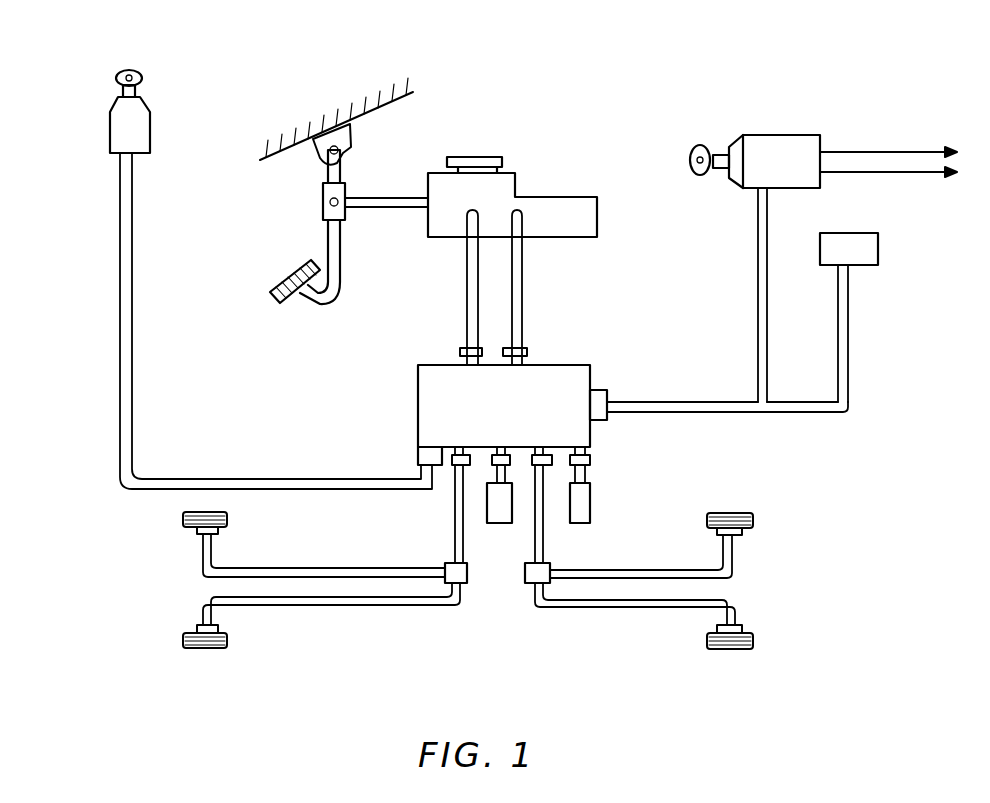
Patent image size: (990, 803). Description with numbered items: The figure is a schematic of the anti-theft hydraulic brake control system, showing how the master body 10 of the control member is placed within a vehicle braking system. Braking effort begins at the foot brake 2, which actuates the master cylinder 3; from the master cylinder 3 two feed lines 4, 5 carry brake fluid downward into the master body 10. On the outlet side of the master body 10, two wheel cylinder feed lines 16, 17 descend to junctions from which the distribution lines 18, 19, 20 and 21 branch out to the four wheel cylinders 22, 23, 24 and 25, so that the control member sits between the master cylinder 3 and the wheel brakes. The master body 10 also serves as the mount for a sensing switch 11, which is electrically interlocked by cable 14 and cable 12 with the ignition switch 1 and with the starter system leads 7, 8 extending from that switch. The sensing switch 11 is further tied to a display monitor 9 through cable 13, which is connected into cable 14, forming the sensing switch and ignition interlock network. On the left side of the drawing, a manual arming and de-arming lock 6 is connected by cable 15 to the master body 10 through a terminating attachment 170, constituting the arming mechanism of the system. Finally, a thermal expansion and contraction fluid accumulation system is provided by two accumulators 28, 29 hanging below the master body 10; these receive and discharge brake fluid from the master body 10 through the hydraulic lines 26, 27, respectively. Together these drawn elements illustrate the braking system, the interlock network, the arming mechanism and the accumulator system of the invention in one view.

The ignition switch 1 is at (765, 143).
The foot brake 2 is at (295, 268).
The master cylinder 3 is at (516, 180).
The feed line 4 is at (467, 303).
The feed line 5 is at (523, 300).
The manual arming and de-arming lock 6 is at (150, 128).
The starter system lead 7 is at (880, 152).
The starter system lead 8 is at (895, 173).
The display monitor 9 is at (878, 252).
The master body 10 is at (590, 366).
The sensing switch 11 is at (607, 392).
The cable 12 is at (768, 345).
The cable 13 is at (848, 345).
The cable 14 is at (688, 413).
The cable 15 is at (262, 479).
The wheel cylinder feed line 16 is at (453, 517).
The wheel cylinder feed line 17 is at (543, 545).
The distribution line 18 is at (362, 547).
The distribution line 19 is at (345, 606).
The distribution line 20 is at (648, 570).
The distribution line 21 is at (648, 607).
The wheel cylinder 22 is at (218, 530).
The wheel cylinder 23 is at (215, 628).
The wheel cylinder 24 is at (742, 530).
The wheel cylinder 25 is at (742, 630).
The hydraulic line 26 is at (505, 483).
The hydraulic line 27 is at (590, 478).
The accumulator 28 is at (500, 523).
The accumulator 29 is at (590, 518).
The terminating attachment 170 is at (418, 455).